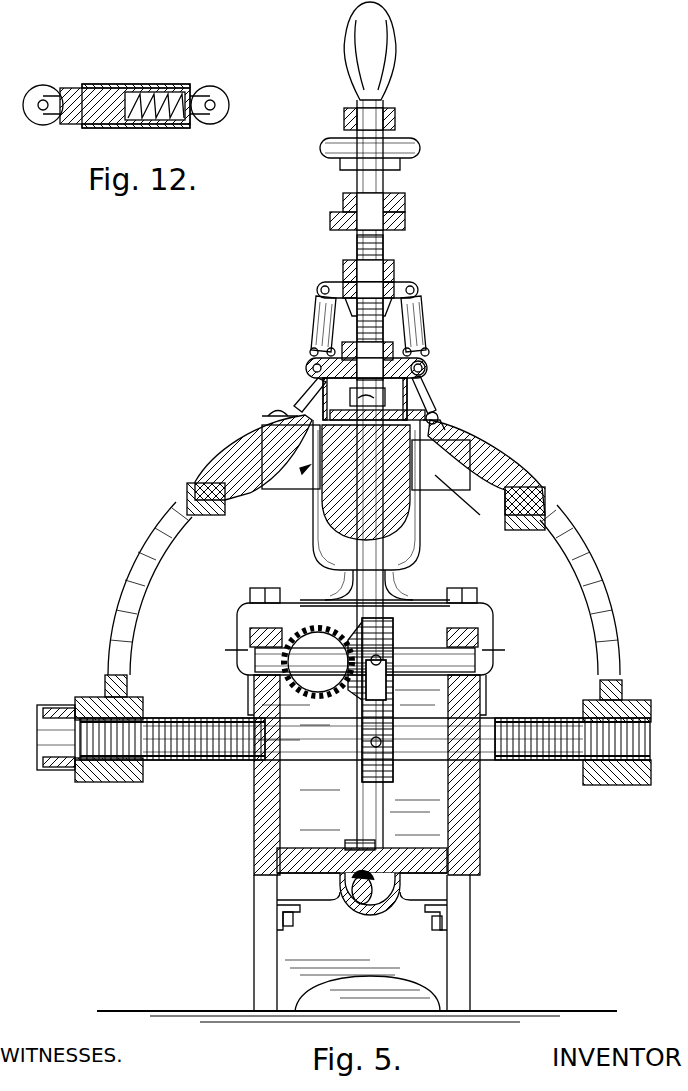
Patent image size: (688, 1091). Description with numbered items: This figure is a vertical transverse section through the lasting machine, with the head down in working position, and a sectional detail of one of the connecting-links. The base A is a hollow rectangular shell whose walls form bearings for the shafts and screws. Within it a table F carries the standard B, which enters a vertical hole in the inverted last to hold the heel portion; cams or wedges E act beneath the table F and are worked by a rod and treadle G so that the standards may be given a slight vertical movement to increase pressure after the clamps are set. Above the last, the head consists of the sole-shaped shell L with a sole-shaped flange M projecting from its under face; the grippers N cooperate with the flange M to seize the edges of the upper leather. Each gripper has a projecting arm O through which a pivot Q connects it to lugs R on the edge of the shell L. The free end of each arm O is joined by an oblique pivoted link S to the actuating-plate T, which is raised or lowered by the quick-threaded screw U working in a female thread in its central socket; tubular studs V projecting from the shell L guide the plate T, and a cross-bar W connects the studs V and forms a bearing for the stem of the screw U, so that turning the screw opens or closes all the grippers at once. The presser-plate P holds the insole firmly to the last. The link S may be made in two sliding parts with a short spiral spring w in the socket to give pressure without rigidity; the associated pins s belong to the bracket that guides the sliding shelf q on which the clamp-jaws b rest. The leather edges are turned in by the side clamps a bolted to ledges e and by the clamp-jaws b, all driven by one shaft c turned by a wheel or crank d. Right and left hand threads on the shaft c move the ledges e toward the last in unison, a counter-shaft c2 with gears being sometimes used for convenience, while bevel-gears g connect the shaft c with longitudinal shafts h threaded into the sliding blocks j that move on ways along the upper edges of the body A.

In FIG. 12, the vertical pins s is at (135, 88).
In FIG. 12, the short spiral spring w is at (180, 92).
In FIG. 5, the cross-bar W is at (405, 212).
In FIG. 5, the quick-threaded screw U is at (383, 242).
In FIG. 5, the tubular studs V is at (394, 262).
In FIG. 5, the actuating-plate T is at (418, 292).
In FIG. 5, the oblique pivoted links S is at (314, 320).
In FIG. 5, the gripper arm O is at (428, 352).
In FIG. 5, the shell L is at (428, 366).
In FIG. 5, the pivot Q is at (426, 370).
In FIG. 5, the lugs R is at (407, 385).
In FIG. 5, the grippers N is at (385, 392).
In FIG. 5, the sole-shaped flange M is at (436, 404).
In FIG. 5, the clamp-jaws b is at (298, 414).
In FIG. 5, the side clamps a is at (215, 470).
In FIG. 5, the ledges e is at (200, 516).
In FIG. 5, the presser-plate P is at (410, 480).
In FIG. 5, the sliding shelf q is at (464, 503).
In FIG. 5, the standard B is at (392, 585).
In FIG. 5, the base A is at (365, 799).
In FIG. 5, the sliding blocks j is at (225, 650).
In FIG. 5, the longitudinal shafts h is at (365, 660).
In FIG. 5, the bevel-gears g is at (300, 628).
In FIG. 5, the counter-shaft c2 is at (425, 652).
In FIG. 5, the shaft c is at (205, 760).
In FIG. 5, the wheel or crank d is at (58, 770).
In FIG. 5, the table F is at (405, 870).
In FIG. 5, the rod and treadle G is at (345, 890).
In FIG. 5, the cams or wedges E is at (395, 905).